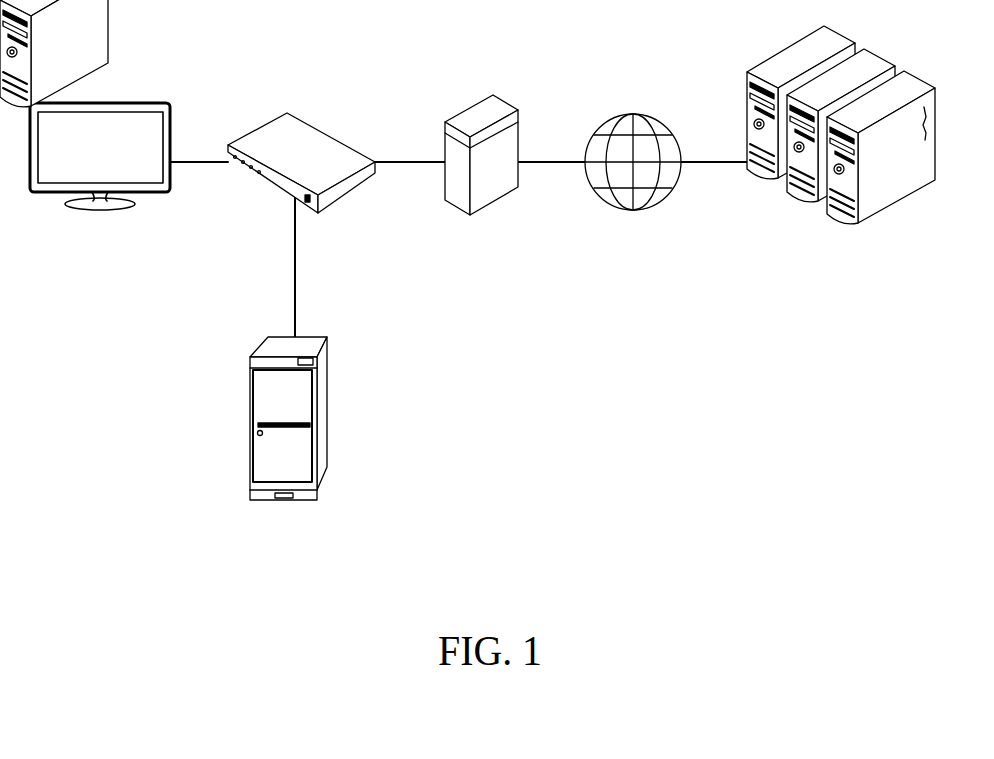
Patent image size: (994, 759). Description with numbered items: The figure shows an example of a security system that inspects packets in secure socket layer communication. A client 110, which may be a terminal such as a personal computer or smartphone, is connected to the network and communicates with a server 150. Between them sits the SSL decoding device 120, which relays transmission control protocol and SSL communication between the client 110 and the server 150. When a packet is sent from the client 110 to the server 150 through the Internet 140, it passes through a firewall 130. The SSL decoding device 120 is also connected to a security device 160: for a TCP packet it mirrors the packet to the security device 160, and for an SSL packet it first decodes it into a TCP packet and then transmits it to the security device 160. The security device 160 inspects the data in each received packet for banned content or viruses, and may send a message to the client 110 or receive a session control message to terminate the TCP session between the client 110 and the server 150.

The client 110 is at (100, 103).
The SSL decoding device 120 is at (323, 131).
The firewall 130 is at (493, 93).
The Internet 140 is at (633, 113).
The server 150 is at (877, 53).
The security device 160 is at (308, 336).